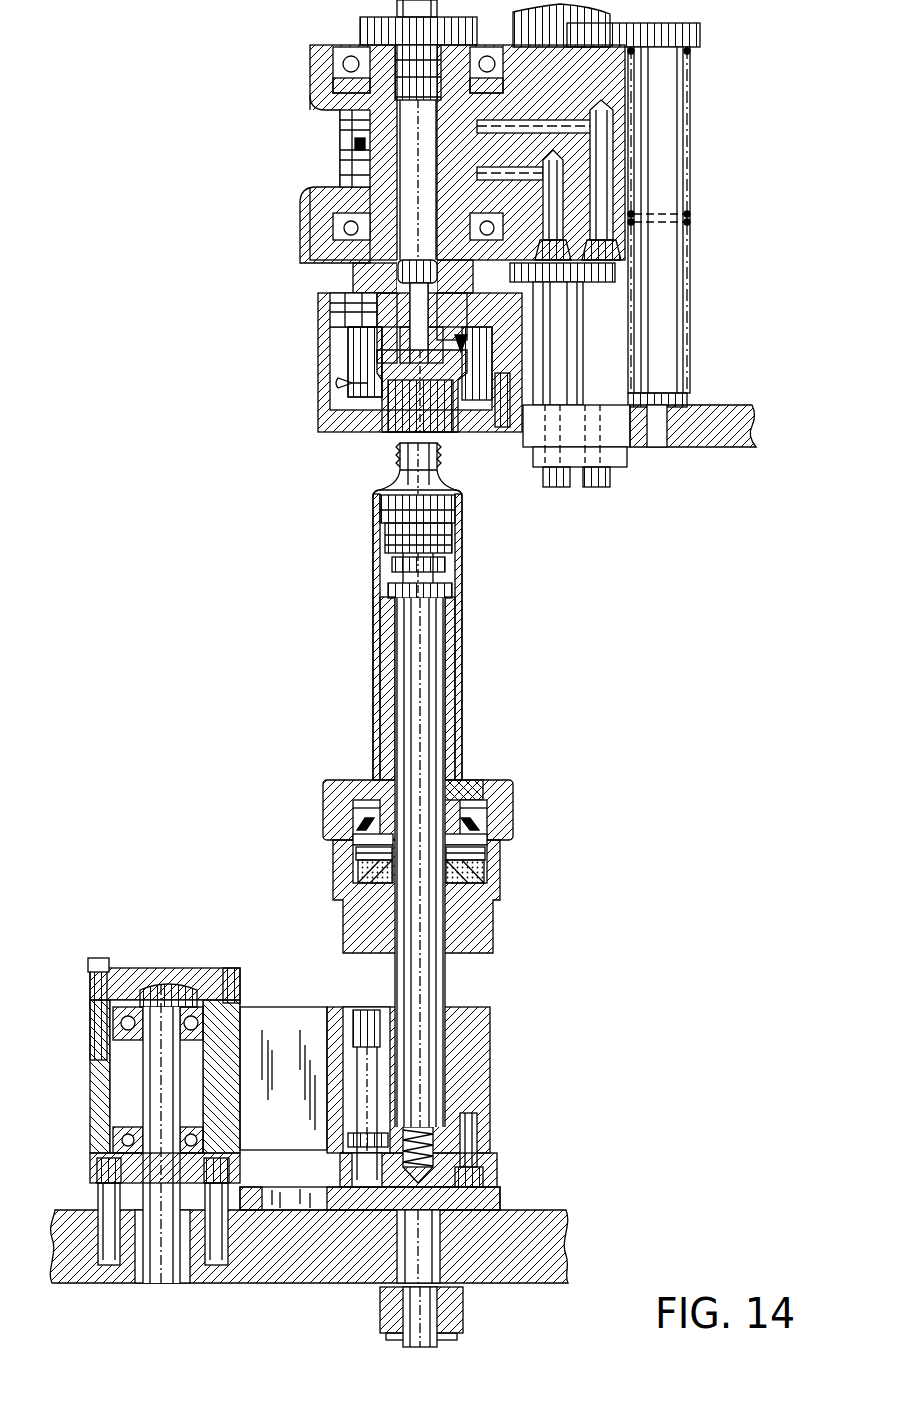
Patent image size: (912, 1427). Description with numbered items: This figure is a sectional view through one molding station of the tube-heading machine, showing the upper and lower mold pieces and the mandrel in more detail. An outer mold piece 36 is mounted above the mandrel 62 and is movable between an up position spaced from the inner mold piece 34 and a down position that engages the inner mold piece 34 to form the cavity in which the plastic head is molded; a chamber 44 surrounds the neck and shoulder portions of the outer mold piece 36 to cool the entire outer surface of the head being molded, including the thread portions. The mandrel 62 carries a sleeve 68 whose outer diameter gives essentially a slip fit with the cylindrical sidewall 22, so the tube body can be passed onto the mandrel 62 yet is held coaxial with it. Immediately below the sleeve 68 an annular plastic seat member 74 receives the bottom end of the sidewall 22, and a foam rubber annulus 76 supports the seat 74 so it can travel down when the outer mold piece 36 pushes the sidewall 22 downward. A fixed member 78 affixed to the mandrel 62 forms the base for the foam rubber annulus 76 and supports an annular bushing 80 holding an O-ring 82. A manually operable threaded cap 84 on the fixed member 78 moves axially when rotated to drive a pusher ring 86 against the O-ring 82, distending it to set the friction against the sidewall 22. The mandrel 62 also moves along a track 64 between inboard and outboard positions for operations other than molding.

The cylindrical sidewall 22 is at (462, 656).
The inner mold piece 34 is at (375, 493).
The outer mold piece 36 is at (383, 386).
The chamber 44 is at (363, 356).
The mandrel 62 is at (439, 611).
The track 64 is at (373, 1267).
The sleeve 68 is at (462, 507).
The annular seat member 74 is at (476, 858).
The foam rubber annulus 76 is at (484, 872).
The fixed member 78 is at (490, 925).
The annular bushing 80 is at (484, 839).
The O-ring 82 is at (476, 822).
The threaded cap 84 is at (513, 790).
The pusher ring 86 is at (470, 782).